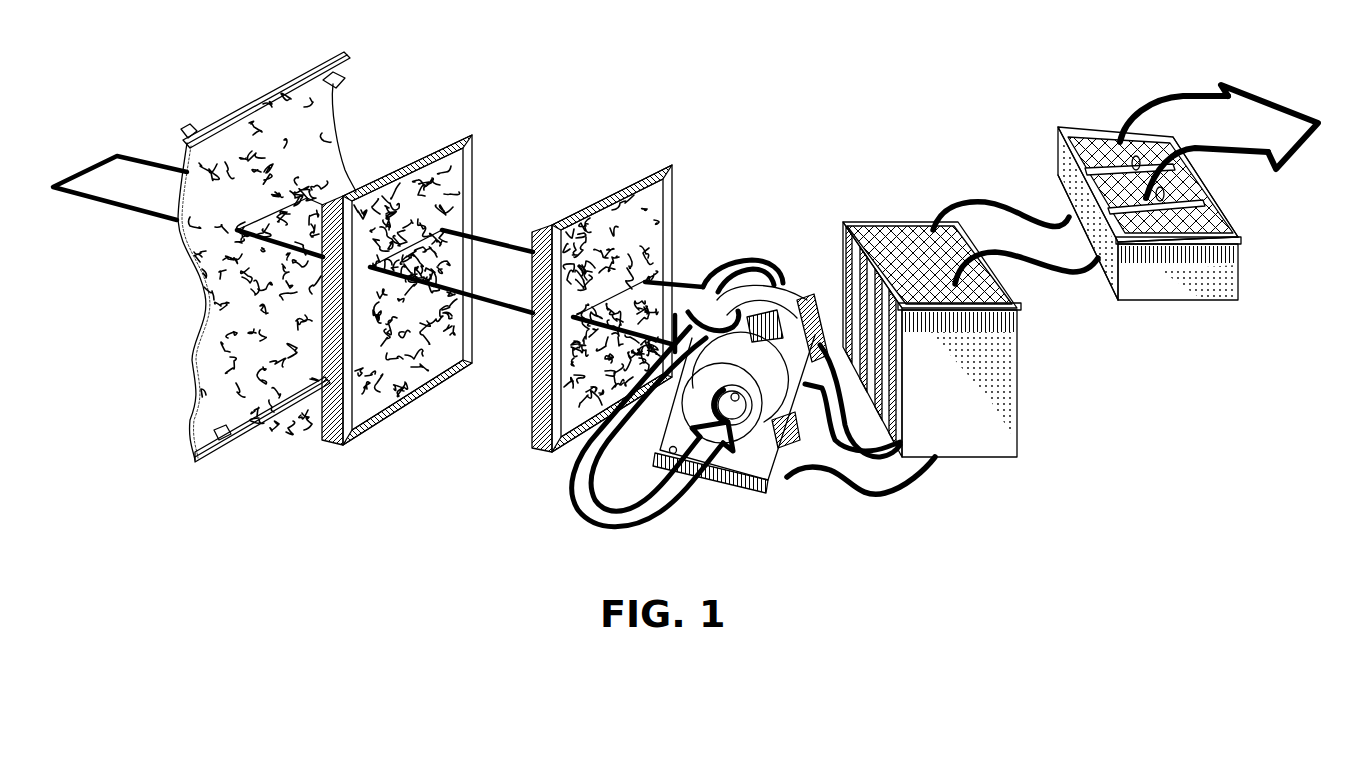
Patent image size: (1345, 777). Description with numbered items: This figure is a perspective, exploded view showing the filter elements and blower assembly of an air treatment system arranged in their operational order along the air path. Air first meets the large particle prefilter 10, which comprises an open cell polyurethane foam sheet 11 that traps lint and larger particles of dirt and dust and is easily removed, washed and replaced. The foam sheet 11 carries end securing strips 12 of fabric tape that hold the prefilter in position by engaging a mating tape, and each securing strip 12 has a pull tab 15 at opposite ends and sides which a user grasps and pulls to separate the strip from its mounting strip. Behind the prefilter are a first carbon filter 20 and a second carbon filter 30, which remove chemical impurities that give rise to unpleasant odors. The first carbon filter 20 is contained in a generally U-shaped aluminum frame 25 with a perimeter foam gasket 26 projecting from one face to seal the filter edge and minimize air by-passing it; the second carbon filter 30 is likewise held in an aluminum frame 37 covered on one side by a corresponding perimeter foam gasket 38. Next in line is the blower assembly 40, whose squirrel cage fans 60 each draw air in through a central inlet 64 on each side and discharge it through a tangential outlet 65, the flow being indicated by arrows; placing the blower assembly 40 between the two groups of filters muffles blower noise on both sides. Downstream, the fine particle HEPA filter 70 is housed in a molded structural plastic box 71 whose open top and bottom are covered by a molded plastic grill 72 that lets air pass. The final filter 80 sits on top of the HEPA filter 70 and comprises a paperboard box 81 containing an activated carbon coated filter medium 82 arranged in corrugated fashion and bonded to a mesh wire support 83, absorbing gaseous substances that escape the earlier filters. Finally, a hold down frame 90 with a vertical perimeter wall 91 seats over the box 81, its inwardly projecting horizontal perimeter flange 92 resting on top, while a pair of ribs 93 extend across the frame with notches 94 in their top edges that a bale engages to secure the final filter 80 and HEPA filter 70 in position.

The large particle prefilter 10 is at (172, 296).
The open cell polyurethane foam sheet 11 is at (262, 362).
The end securing strip 12 is at (268, 96).
The pull tab 15 is at (187, 127).
The first carbon filter 20 is at (483, 181).
The aluminum frame 25 is at (458, 132).
The perimeter foam gasket 26 is at (378, 424).
The second carbon filter 30 is at (684, 186).
The aluminum frame 37 is at (628, 175).
The perimeter foam gasket 38 is at (677, 233).
The blower assembly 40 is at (782, 250).
The squirrel cage fan 60 is at (687, 408).
The inlet 64 is at (740, 434).
The tangential outlet 65 is at (826, 352).
The fine particle HEPA filter 70 is at (896, 206).
The molded structural plastic box 71 is at (946, 415).
The molded plastic grill 72 is at (920, 236).
The final filter 80 is at (1063, 167).
The paperboard box 81 is at (1156, 289).
The activated carbon coated filter medium 82 is at (1207, 230).
The mesh wire support 83 is at (1102, 254).
The hold down frame 90 is at (1064, 116).
The vertical perimeter wall 91 is at (1240, 232).
The horizontal perimeter flange 92 is at (1193, 203).
The ribs 93 is at (1100, 160).
The notches 94 is at (1160, 187).